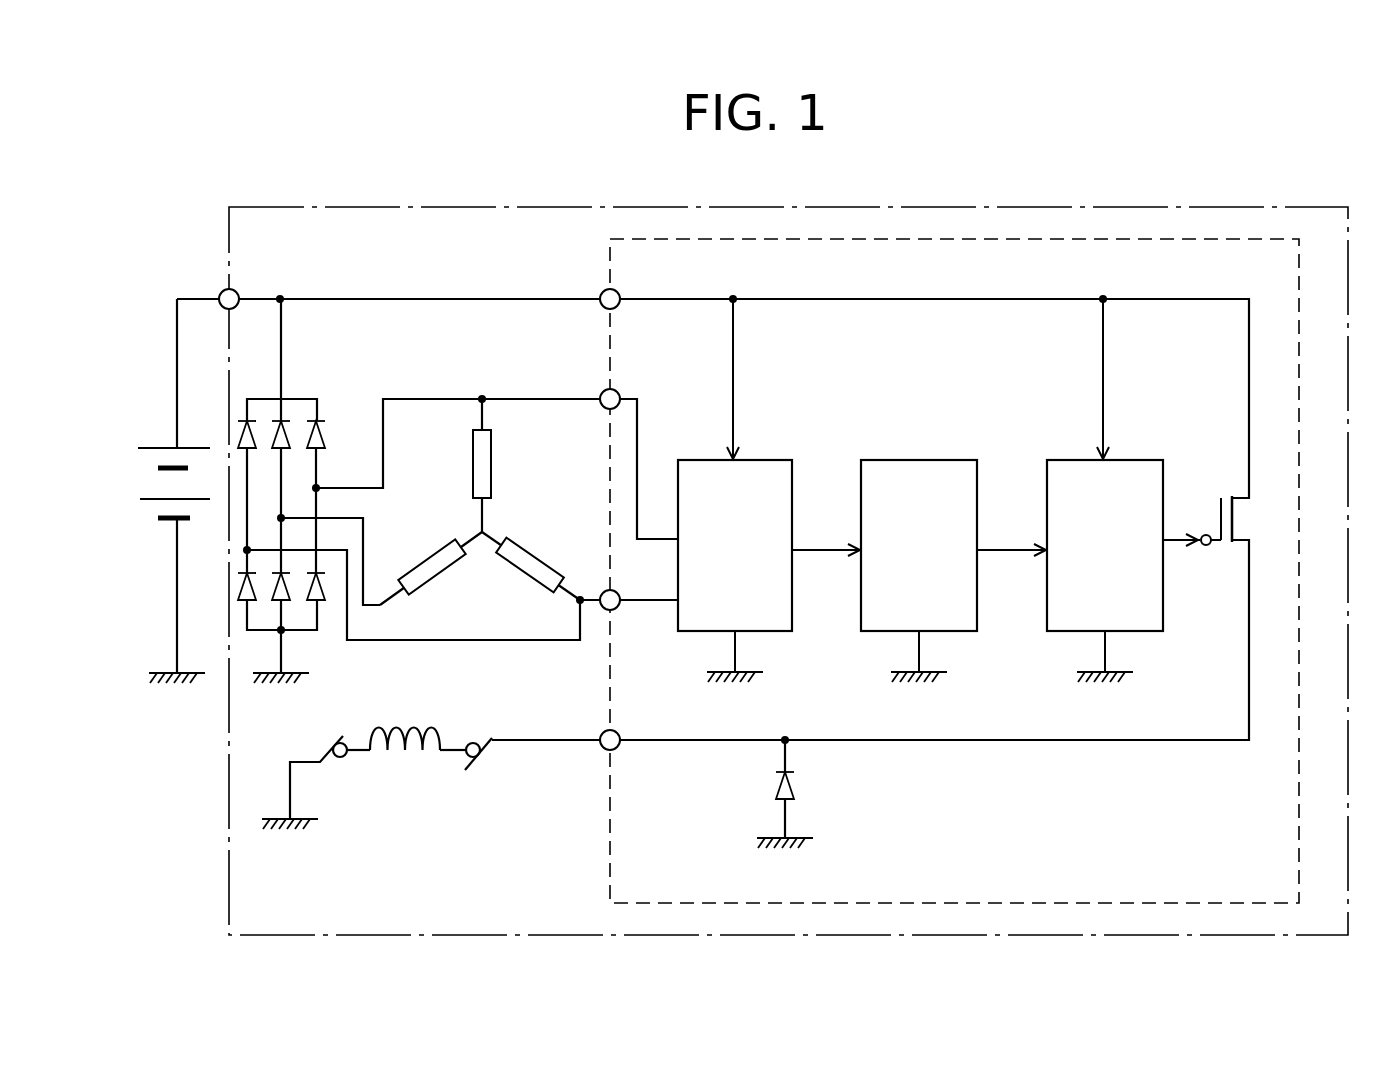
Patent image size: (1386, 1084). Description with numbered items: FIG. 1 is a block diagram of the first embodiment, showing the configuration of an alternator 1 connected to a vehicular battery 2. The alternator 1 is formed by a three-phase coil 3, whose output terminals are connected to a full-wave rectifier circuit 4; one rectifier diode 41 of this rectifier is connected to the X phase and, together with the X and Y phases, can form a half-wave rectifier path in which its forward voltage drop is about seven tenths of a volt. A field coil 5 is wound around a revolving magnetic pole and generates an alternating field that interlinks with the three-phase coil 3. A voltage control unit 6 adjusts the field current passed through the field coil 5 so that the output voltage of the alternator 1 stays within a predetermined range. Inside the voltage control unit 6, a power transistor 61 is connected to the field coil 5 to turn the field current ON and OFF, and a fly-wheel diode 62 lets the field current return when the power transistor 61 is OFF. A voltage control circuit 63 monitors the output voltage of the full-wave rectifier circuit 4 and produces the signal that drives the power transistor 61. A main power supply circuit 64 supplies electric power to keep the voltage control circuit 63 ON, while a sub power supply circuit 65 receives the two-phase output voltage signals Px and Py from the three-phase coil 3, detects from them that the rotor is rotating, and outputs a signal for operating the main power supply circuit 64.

The alternator 1 is at (262, 207).
The vehicular battery 2 is at (166, 447).
The three-phase coil 3 is at (467, 445).
The full-wave rectifier circuit 4 is at (295, 399).
The rectifier diode 41 is at (304, 645).
The field coil 5 is at (413, 765).
The voltage control unit 6 is at (606, 240).
The power transistor 61 is at (1230, 493).
The fly-wheel diode 62 is at (795, 790).
The voltage control circuit 63 is at (1140, 631).
The main power supply circuit 64 is at (950, 631).
The sub power supply circuit 65 is at (770, 631).